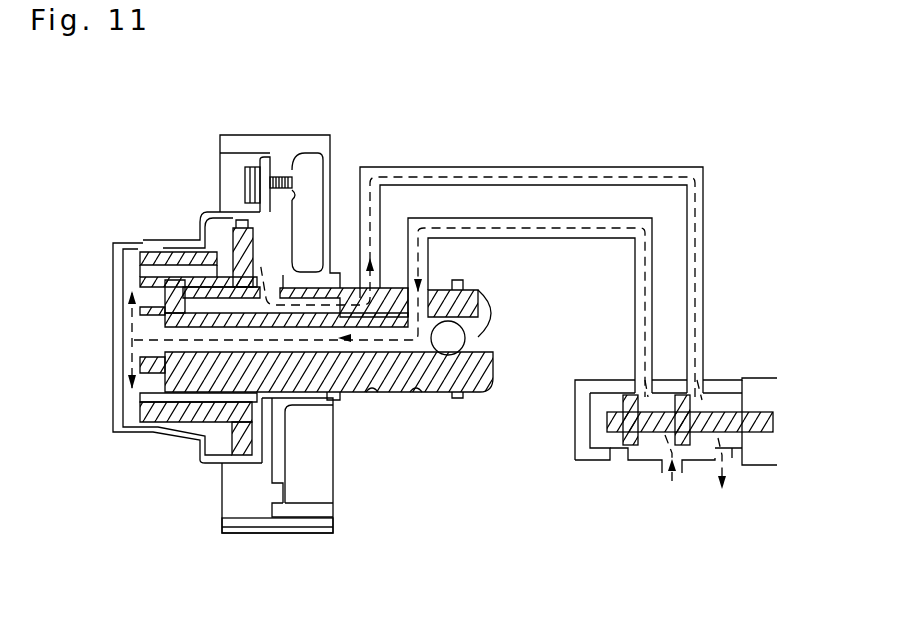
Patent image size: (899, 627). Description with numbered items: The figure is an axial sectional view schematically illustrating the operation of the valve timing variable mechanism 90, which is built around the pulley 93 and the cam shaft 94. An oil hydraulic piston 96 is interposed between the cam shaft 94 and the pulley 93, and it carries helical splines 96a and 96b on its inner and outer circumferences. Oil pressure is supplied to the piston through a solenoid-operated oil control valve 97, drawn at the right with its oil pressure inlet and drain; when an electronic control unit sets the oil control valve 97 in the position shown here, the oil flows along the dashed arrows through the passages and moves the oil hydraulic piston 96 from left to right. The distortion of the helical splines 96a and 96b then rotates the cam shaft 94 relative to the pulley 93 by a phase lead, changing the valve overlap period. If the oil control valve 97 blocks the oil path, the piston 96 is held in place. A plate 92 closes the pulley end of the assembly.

The valve timing variable mechanism 90 is at (360, 118).
The bottom plate 92 is at (323, 533).
The pulley 93 is at (313, 517).
The cam shaft 94 is at (397, 386).
The oil hydraulic piston 96 is at (146, 262).
The helical spline 96a is at (147, 252).
The helical spline 96b is at (137, 278).
The oil control valve 97 is at (728, 378).